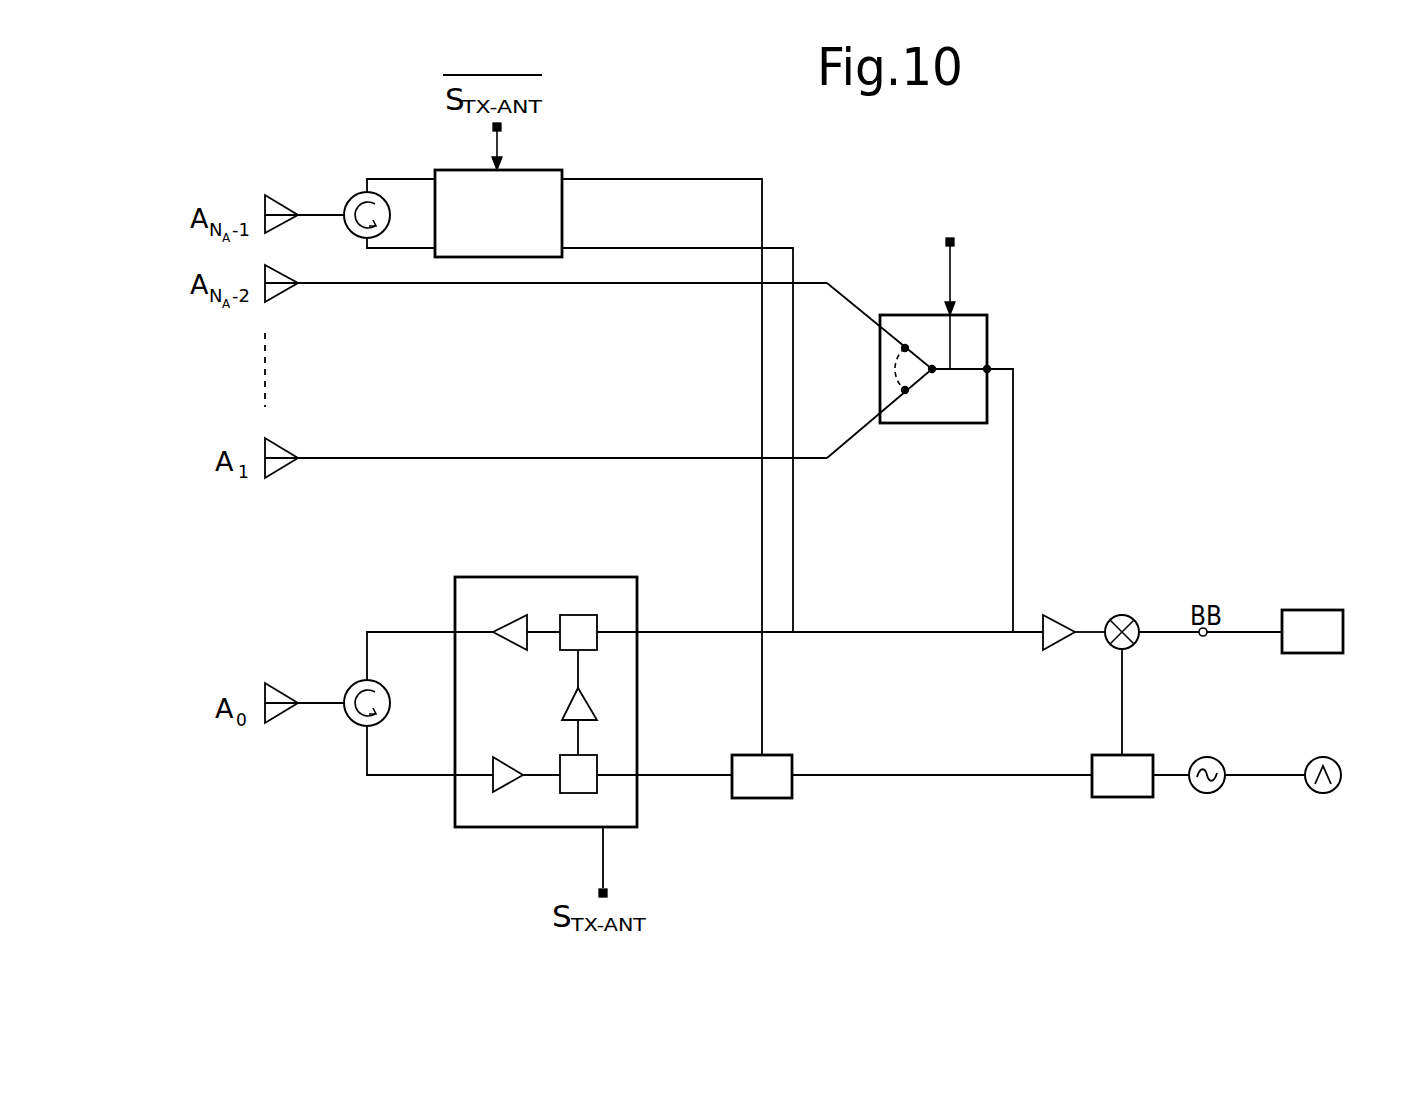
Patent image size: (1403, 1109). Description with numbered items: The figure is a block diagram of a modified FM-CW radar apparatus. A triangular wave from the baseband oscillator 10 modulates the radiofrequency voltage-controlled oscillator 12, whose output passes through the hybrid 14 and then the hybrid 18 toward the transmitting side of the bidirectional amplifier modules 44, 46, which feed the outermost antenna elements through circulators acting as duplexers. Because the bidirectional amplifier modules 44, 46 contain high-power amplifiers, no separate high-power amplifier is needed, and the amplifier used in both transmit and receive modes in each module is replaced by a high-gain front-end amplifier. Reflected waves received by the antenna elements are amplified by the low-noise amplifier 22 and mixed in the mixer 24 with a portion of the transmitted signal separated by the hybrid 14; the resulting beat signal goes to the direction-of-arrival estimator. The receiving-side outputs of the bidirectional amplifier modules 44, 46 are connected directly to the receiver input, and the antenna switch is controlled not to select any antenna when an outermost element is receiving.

The baseband oscillator 10 is at (1322, 793).
The radiofrequency voltage-controlled oscillator 12 is at (1205, 793).
The hybrid 14 is at (1122, 797).
The hybrid 18 is at (763, 798).
The low-noise amplifier 22 is at (1063, 650).
The mixer 24 is at (1138, 642).
The bidirectional amplifier module 44 is at (520, 170).
The bidirectional amplifier module 46 is at (637, 593).